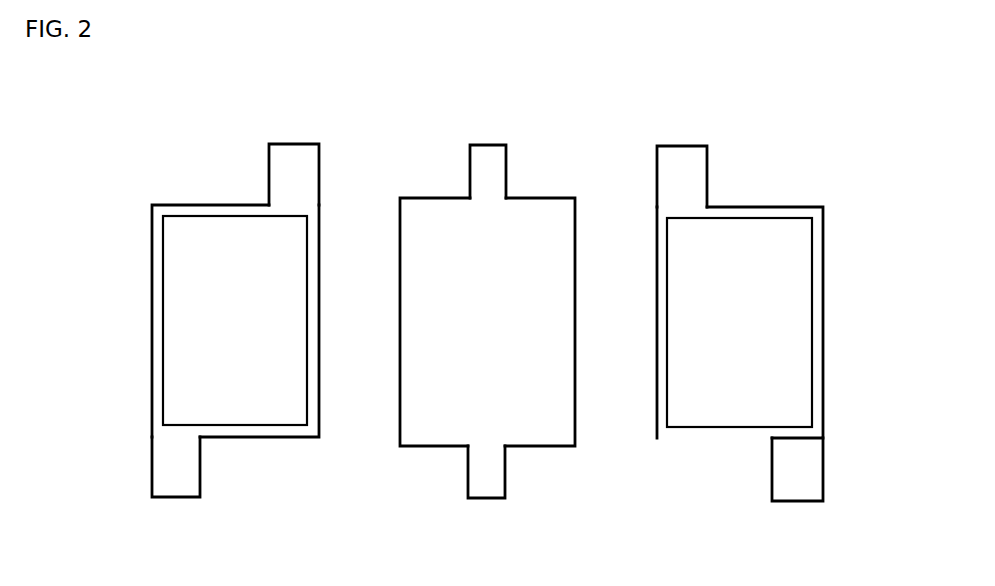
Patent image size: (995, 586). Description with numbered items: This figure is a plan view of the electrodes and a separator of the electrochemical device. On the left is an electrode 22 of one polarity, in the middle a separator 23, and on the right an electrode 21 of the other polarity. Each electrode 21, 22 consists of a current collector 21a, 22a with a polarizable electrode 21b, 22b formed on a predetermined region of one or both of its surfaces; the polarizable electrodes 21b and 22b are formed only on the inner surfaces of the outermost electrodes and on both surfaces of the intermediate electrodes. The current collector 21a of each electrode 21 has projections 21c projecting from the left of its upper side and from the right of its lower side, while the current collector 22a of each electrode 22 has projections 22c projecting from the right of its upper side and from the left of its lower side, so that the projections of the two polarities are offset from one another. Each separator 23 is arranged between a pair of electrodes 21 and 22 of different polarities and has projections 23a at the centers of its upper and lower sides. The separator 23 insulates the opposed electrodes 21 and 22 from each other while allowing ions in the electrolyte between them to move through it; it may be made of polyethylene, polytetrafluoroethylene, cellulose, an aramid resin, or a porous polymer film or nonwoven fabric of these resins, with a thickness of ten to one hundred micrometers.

The electrode 21 is at (735, 131).
The current collector 21a is at (797, 208).
The polarizable electrode 21b is at (743, 230).
The projection 21c is at (678, 156).
The electrode 22 is at (130, 128).
The current collector 22a is at (165, 205).
The polarizable electrode 22b is at (220, 228).
The projection 22c is at (294, 154).
The separator 23 is at (552, 208).
The projection 23a is at (486, 154).